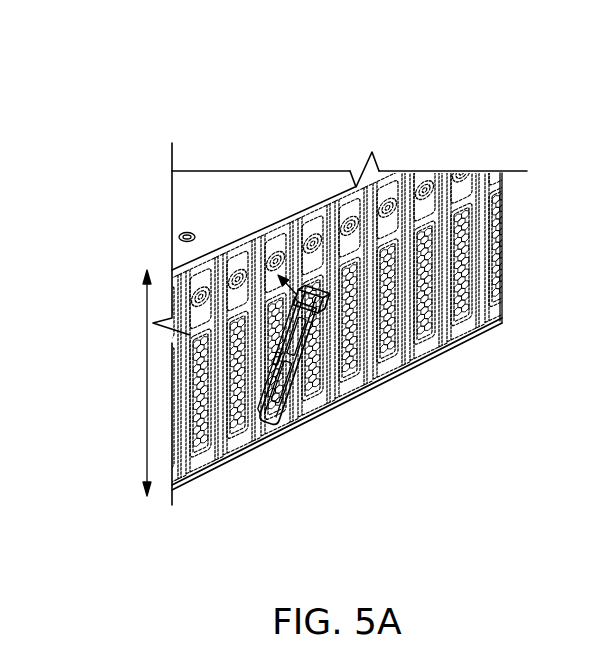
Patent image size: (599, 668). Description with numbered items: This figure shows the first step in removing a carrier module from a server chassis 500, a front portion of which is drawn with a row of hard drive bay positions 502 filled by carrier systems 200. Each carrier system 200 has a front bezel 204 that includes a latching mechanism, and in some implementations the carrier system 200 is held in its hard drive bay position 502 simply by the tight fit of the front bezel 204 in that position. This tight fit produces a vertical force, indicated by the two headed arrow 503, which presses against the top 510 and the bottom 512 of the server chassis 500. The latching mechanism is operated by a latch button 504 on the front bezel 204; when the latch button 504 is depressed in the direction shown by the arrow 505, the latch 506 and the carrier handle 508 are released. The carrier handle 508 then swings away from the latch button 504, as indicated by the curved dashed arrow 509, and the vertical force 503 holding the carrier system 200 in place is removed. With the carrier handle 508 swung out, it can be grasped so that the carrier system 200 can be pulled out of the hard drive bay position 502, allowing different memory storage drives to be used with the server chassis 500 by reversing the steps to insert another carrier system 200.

The server chassis 500 is at (142, 73).
The carrier system 200 is at (298, 201).
The front bezel 204 is at (277, 222).
The top 510 is at (208, 222).
The arrow 505 is at (372, 151).
The latch button 504 is at (180, 237).
The curved dashed arrow 509 is at (282, 278).
The two headed arrow 503 is at (147, 363).
The hard drive bay position 502 is at (303, 436).
The bottom 512 is at (238, 462).
The latch 506 is at (305, 290).
The carrier handle 508 is at (303, 360).